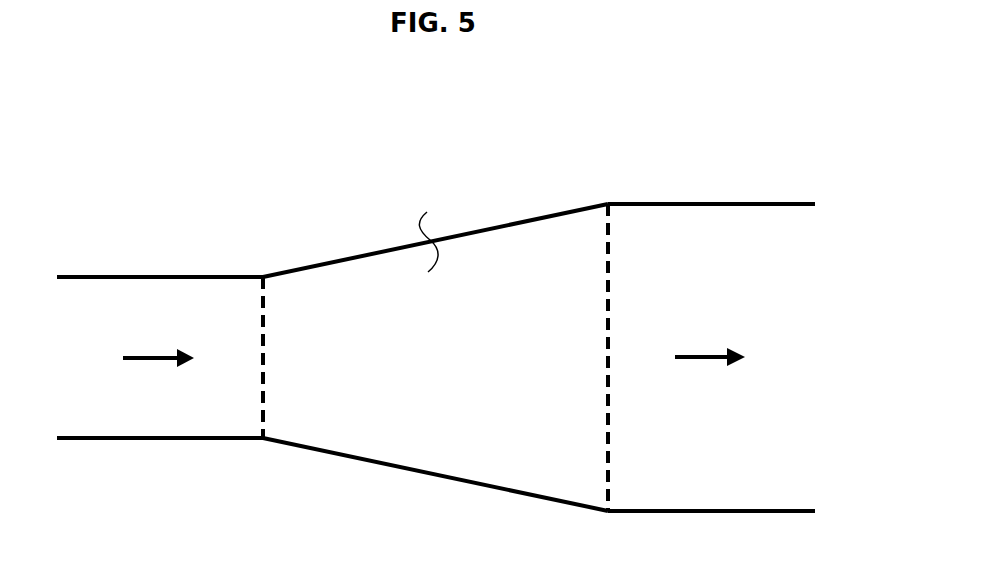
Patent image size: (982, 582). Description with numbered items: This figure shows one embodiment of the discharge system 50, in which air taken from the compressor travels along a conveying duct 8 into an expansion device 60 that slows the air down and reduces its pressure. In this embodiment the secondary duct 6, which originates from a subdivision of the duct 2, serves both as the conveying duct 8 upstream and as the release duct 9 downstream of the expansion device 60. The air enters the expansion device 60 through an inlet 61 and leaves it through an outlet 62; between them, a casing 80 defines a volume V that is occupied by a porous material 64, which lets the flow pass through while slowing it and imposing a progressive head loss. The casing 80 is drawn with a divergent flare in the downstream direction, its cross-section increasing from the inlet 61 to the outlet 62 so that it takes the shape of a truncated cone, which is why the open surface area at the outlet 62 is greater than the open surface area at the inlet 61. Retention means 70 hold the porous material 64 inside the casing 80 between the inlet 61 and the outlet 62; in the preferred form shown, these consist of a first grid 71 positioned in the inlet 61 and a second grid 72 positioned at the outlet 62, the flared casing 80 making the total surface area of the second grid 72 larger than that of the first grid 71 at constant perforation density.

The discharge system 50 is at (487, 99).
The duct 2 is at (160, 326).
The secondary duct 6 is at (436, 327).
The conveying duct 8 is at (160, 275).
The release duct 9 is at (705, 202).
The expansion device 60 is at (469, 204).
The casing 80 is at (487, 487).
The porous material 64 is at (437, 372).
The inlet 61 is at (263, 274).
The outlet 62 is at (608, 200).
The retention means 70 is at (483, 321).
The first grid 71 is at (265, 418).
The second grid 72 is at (612, 450).